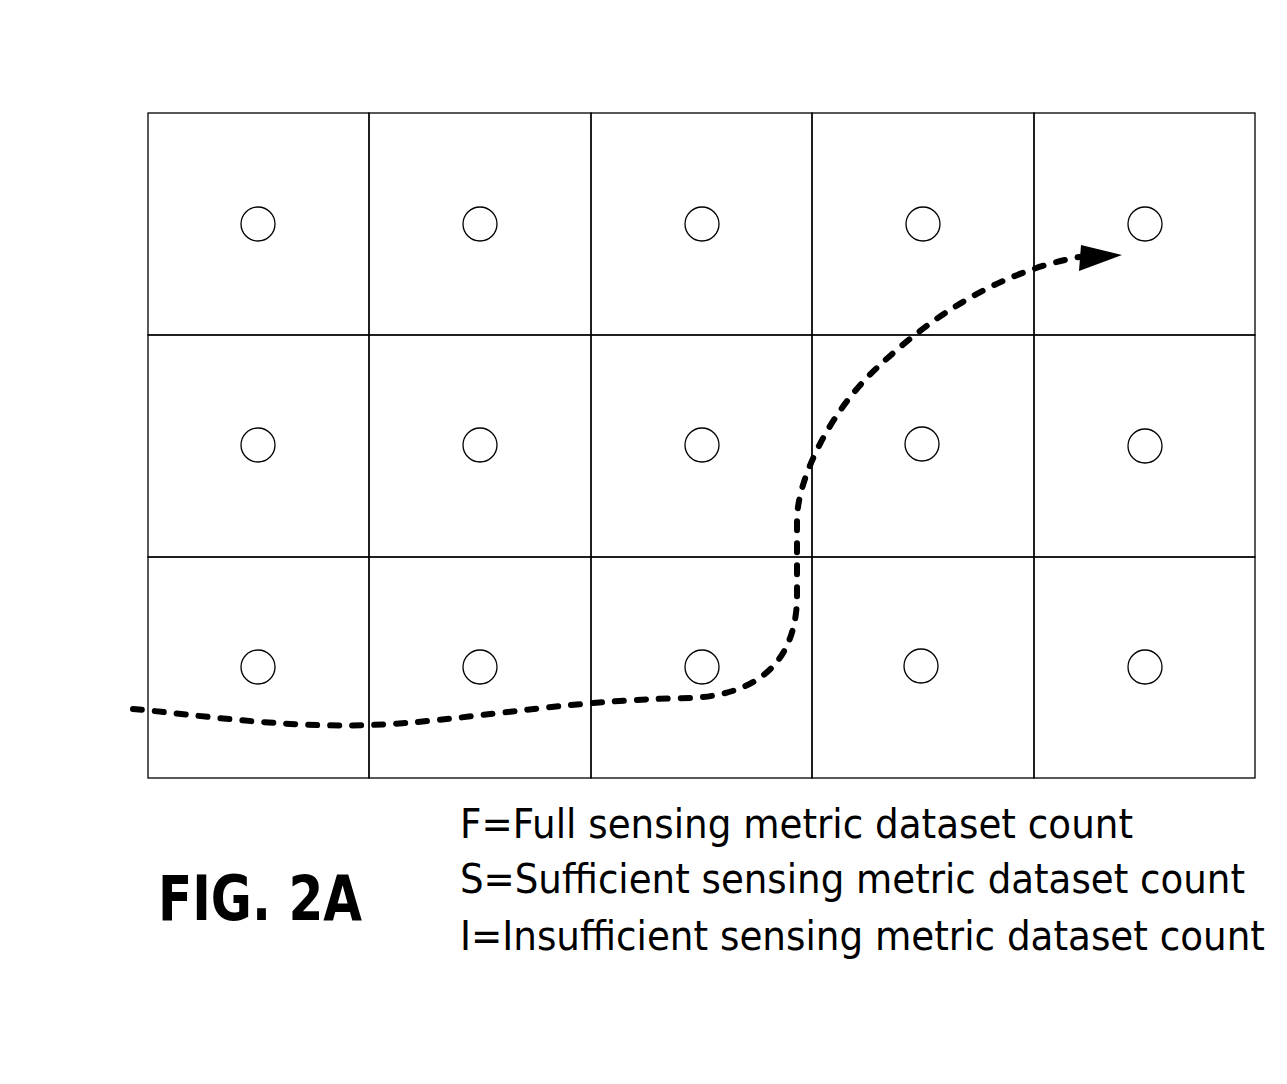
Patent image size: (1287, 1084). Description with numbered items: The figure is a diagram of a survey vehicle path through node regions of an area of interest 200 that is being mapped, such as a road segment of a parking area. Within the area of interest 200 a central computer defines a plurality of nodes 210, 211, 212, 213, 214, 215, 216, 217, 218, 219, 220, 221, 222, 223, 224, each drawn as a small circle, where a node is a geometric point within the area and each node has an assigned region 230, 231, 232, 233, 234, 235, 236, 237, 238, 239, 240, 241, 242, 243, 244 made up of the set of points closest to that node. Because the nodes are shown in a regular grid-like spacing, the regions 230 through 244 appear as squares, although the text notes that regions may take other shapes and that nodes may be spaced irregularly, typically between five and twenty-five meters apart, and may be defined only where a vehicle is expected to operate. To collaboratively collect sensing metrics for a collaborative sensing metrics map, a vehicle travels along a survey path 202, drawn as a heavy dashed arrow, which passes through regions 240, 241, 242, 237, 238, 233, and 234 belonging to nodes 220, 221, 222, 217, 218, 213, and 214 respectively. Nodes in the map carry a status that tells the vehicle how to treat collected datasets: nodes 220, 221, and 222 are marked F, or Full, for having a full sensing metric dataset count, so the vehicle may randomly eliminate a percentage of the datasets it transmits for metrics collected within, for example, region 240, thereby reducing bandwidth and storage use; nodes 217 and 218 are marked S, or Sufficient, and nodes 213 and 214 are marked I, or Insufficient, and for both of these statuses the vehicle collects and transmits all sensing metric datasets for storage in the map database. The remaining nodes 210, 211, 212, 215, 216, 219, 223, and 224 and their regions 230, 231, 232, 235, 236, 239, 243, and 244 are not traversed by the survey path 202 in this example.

The area of interest 200 is at (1182, 80).
The survey path 202 is at (951, 305).
The node 210 is at (250, 208).
The node 211 is at (472, 208).
The node 212 is at (694, 208).
The node 213 is at (915, 208).
The node 214 is at (1137, 208).
The node 215 is at (250, 429).
The node 216 is at (472, 429).
The node 217 is at (704, 428).
The node 218 is at (936, 435).
The node 219 is at (1137, 430).
The node 220 is at (254, 650).
The node 221 is at (476, 650).
The node 222 is at (702, 650).
The node 223 is at (914, 650).
The node 224 is at (1137, 651).
The assigned region 230 is at (277, 310).
The assigned region 231 is at (499, 310).
The assigned region 232 is at (721, 310).
The assigned region 233 is at (881, 296).
The assigned region 234 is at (1164, 310).
The assigned region 235 is at (277, 532).
The assigned region 236 is at (499, 532).
The assigned region 237 is at (721, 532).
The assigned region 238 is at (942, 532).
The assigned region 239 is at (1164, 532).
The assigned region 240 is at (277, 754).
The assigned region 241 is at (499, 754).
The assigned region 242 is at (721, 754).
The assigned region 243 is at (942, 754).
The assigned region 244 is at (1164, 754).